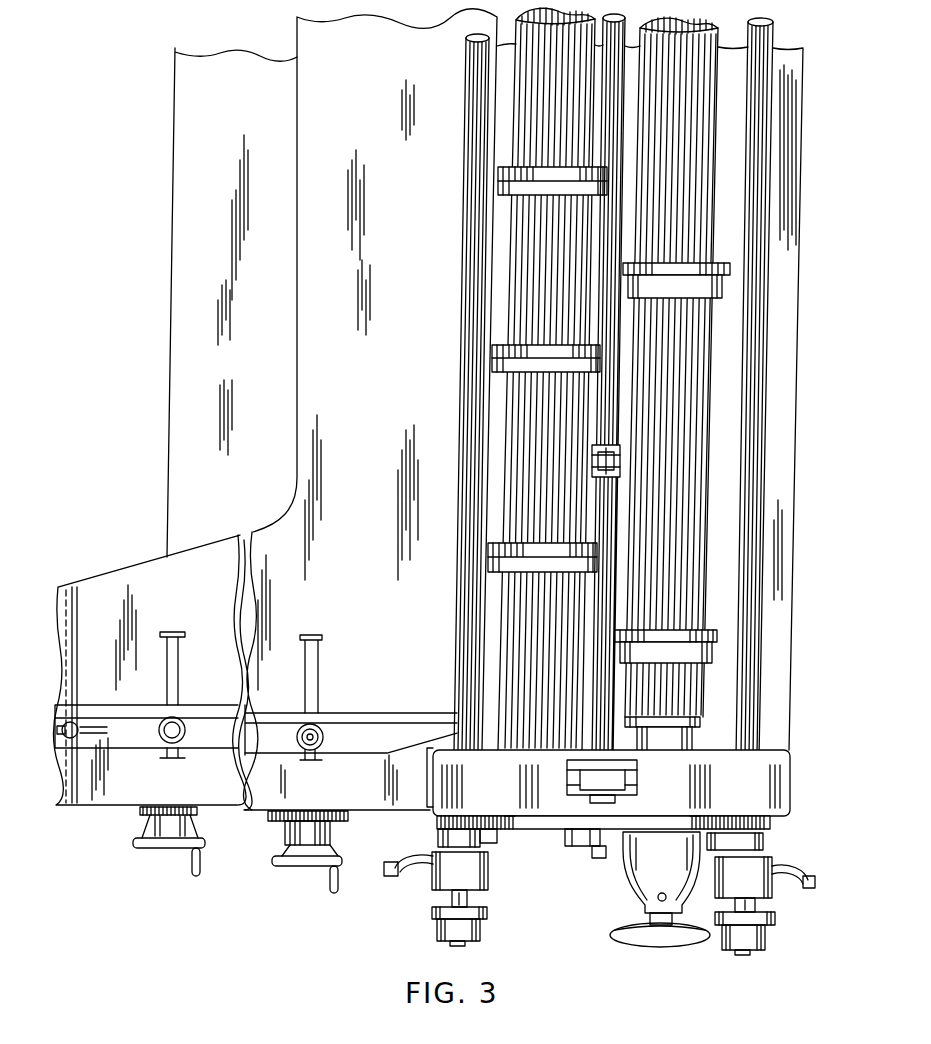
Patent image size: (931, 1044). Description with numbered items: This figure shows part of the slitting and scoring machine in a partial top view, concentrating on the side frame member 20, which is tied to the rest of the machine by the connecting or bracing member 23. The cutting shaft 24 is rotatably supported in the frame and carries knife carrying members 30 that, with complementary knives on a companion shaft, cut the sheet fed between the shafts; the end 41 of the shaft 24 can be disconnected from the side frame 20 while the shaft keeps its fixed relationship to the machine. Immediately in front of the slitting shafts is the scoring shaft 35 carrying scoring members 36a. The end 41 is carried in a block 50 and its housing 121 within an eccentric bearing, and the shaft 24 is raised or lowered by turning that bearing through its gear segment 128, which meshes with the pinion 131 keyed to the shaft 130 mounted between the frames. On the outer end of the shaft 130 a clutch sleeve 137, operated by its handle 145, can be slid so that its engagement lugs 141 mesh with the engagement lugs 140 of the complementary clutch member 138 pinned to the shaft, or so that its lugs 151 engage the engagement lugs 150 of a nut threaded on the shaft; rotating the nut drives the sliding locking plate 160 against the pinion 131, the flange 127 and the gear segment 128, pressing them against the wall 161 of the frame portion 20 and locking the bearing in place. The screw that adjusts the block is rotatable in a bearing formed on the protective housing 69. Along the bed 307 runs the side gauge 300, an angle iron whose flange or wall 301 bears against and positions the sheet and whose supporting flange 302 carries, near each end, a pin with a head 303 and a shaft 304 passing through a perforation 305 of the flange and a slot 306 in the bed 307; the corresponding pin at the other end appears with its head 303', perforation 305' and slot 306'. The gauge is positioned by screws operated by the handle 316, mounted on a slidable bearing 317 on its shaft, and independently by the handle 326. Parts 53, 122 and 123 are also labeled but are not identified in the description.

The side frame member 20 is at (795, 791).
The connecting or bracing member 23 is at (783, 649).
The cutting shaft 24 is at (667, 504).
The knife carrying member 30 is at (732, 256).
The scoring shaft 35 is at (552, 258).
The scoring member 36a is at (556, 207).
The end of cutting shaft 41 is at (699, 725).
The block 50 is at (693, 755).
The foot pad 53 is at (632, 947).
The protective housing 69 is at (626, 891).
The housing 121 is at (590, 856).
The bracket 122 is at (570, 846).
The nut 123 is at (600, 859).
The flange 127 is at (620, 796).
The gear segment 128 is at (512, 816).
The shaft 130 is at (458, 388).
The pinion 131 is at (437, 823).
The clutch sleeve 137 is at (489, 870).
The complementary clutch member 138 is at (489, 913).
The engagement lugs 140 is at (466, 898).
The engagement lugs 141 is at (452, 895).
The handle 145 is at (388, 866).
The engagement lugs 150 is at (440, 849).
The lugs 151 is at (440, 841).
The sliding locking plate 160 is at (486, 840).
The wall 161 is at (665, 821).
The side gauge 300 is at (351, 708).
The flange or wall 301 is at (343, 718).
The supporting flange 302 is at (378, 753).
The head 303 is at (287, 760).
The clamp 303' is at (151, 757).
The shaft 304 is at (302, 727).
The perforation 305 is at (289, 737).
The knob 305' is at (150, 732).
The slot 306 is at (327, 674).
The rod 306' is at (188, 668).
The bed 307 is at (350, 584).
The handle 316 is at (331, 879).
The bearing 317 is at (331, 838).
The handle 326 is at (193, 861).